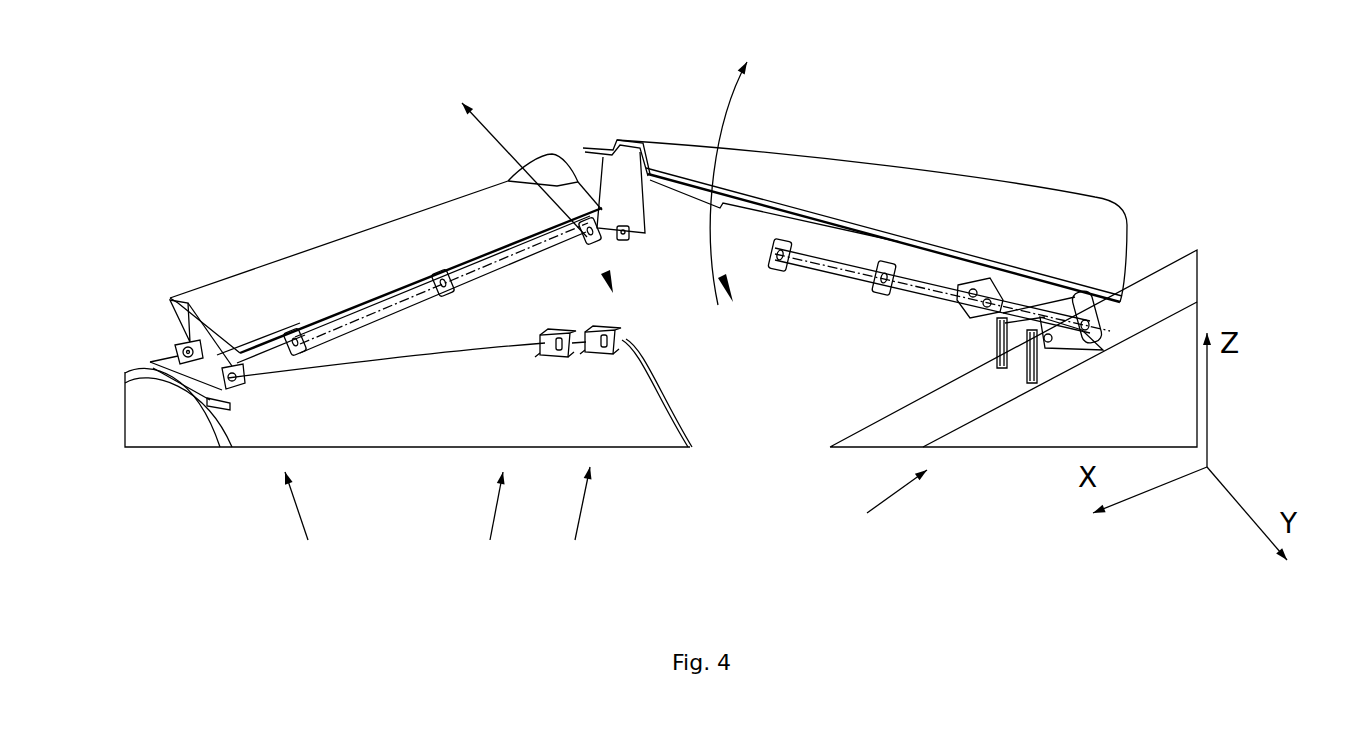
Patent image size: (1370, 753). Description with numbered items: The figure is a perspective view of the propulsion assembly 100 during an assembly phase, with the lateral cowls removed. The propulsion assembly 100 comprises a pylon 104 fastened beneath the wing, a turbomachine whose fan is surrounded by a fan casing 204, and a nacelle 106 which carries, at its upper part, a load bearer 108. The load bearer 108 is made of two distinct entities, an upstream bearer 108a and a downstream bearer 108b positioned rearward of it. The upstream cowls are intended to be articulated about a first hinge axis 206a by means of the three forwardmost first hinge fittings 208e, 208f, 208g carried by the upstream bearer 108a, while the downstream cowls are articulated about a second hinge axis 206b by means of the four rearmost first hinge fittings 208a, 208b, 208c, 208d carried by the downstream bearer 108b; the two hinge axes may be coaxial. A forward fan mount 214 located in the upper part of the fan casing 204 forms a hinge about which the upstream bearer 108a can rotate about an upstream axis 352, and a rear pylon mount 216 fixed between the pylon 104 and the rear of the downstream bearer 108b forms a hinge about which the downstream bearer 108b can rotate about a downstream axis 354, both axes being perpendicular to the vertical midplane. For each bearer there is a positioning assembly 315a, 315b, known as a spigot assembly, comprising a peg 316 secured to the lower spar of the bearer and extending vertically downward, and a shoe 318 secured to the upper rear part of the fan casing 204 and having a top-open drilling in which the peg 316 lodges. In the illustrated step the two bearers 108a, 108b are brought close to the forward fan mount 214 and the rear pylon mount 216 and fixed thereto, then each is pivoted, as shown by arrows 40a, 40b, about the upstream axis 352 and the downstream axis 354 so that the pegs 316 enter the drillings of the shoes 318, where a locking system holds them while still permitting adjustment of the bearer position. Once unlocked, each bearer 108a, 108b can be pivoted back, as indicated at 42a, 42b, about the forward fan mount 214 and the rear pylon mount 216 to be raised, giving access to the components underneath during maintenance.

The propulsion assembly 100 is at (1240, 217).
The nacelle 106 is at (1148, 175).
The load bearer 108 is at (1138, 122).
The upstream bearer 108a is at (328, 262).
The downstream bearer 108b is at (921, 180).
The pylon 104 is at (1160, 420).
The fan casing 204 is at (460, 437).
The first hinge axis 206a is at (313, 323).
The second hinge axis 206b is at (1030, 350).
The first hinge fitting 208a is at (1105, 306).
The first hinge fitting 208b is at (985, 318).
The first hinge fitting 208c is at (873, 295).
The first hinge fitting 208d is at (781, 238).
The first hinge fitting 208e is at (588, 242).
The first hinge fitting 208f is at (450, 297).
The first hinge fitting 208g is at (283, 333).
The forward fan mount 214 is at (312, 526).
The rear pylon mount 216 is at (883, 512).
The positioning assembly 315a is at (491, 527).
The positioning assembly 315b is at (578, 522).
The peg 316 is at (627, 229).
The shoe 318 is at (626, 338).
The upstream axis 352 is at (185, 364).
The downstream axis 354 is at (1030, 350).
The pivoting arrow 40a is at (473, 284).
The pivoting arrow 40b is at (914, 290).
The raising pivot 42a is at (524, 156).
The raising pivot 42b is at (715, 174).